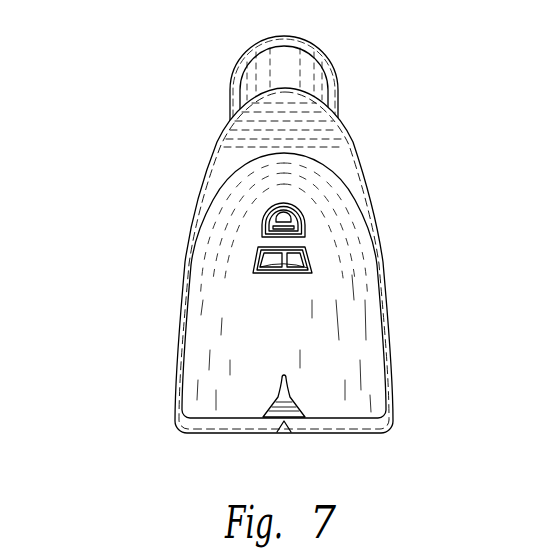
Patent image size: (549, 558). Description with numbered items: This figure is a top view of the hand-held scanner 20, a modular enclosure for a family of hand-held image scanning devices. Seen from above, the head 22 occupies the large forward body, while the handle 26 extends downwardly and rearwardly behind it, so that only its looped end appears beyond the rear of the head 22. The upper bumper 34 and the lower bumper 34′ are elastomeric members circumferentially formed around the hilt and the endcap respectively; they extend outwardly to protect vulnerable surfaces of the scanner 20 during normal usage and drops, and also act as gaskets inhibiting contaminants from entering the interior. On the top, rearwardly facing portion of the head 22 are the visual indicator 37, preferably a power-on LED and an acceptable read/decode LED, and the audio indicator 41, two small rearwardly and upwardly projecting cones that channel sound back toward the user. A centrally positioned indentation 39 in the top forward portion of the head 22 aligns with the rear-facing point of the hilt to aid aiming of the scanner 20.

The hand-scanner 20 is at (141, 397).
The head 22 is at (365, 358).
The handle 26 is at (253, 72).
The upper bumper 34 is at (285, 115).
The lower bumper 34′ is at (250, 53).
The visual indicator 37 is at (272, 220).
The indentation 39 is at (283, 405).
The audio indicator 41 is at (260, 266).